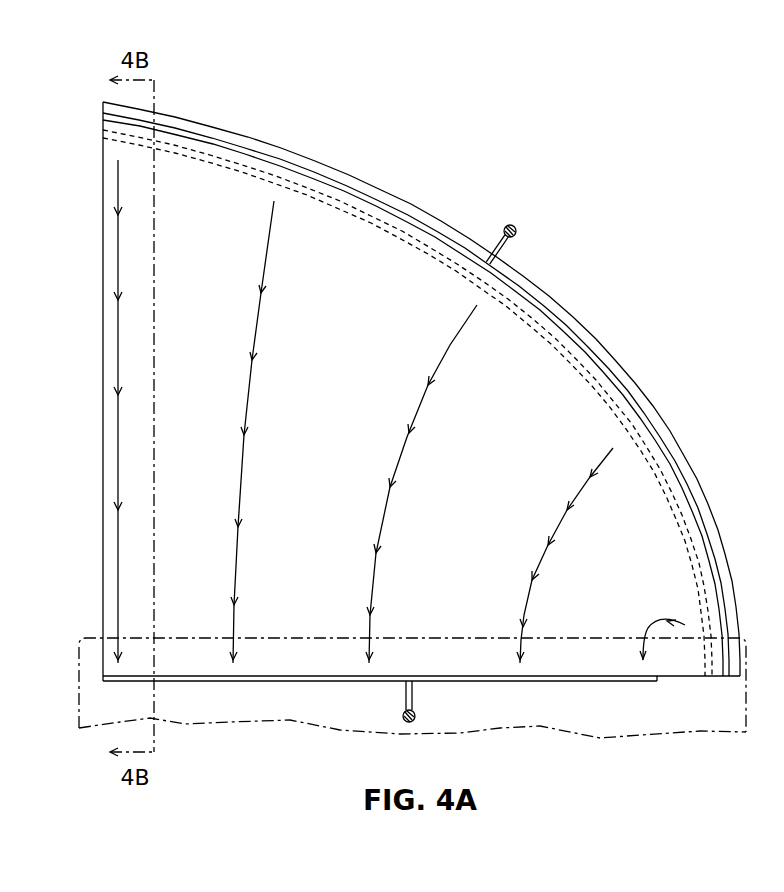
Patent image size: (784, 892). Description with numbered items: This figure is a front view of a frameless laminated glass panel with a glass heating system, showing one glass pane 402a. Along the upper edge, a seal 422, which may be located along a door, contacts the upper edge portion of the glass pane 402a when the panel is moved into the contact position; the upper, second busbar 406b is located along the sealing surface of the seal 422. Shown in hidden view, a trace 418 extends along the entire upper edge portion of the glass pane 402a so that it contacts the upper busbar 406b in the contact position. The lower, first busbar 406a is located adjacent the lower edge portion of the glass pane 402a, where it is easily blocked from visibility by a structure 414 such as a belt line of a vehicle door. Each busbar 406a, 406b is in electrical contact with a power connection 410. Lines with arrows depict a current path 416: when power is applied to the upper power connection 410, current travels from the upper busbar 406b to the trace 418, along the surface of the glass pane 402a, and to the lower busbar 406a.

The glass pane 402a is at (103, 313).
The first busbar 406a is at (563, 682).
The second busbar 406b is at (547, 313).
The power connection 410 is at (515, 247).
The structure 414 is at (187, 725).
The current path 416 is at (195, 193).
The trace 418 is at (365, 215).
The seal 422 is at (275, 147).